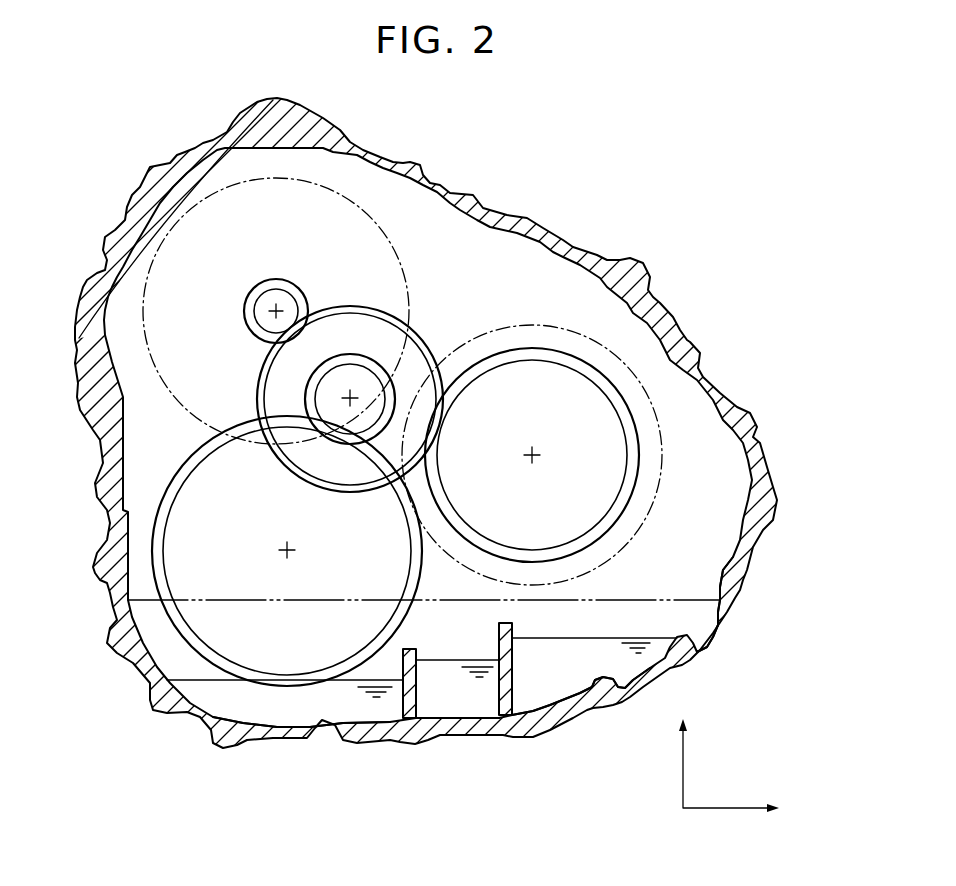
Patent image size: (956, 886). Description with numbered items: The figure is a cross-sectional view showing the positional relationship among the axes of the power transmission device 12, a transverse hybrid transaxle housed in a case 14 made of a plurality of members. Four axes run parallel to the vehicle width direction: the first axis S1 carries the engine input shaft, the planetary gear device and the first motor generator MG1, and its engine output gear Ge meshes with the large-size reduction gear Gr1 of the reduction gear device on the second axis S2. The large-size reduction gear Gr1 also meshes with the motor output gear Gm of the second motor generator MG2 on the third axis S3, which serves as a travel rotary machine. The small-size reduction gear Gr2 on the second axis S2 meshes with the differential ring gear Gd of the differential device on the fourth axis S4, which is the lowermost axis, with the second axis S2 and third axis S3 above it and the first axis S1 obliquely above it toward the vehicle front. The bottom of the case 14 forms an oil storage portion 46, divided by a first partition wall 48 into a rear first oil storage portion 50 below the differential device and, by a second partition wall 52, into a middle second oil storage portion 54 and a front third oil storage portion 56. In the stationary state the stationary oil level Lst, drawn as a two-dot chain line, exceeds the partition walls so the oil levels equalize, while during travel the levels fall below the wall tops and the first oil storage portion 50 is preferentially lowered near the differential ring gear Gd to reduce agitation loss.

The power transmission device 12 is at (608, 132).
The case 14 is at (680, 352).
The oil storage portion 46 is at (692, 592).
The first partition wall 48 is at (383, 720).
The first oil storage portion 50 is at (283, 713).
The second partition wall 52 is at (515, 690).
The second oil storage portion 54 is at (455, 703).
The third oil storage portion 56 is at (592, 667).
The first axis S1 is at (544, 445).
The second axis S2 is at (350, 399).
The third axis S3 is at (276, 311).
The fourth axis S4 is at (278, 538).
The first motor generator MG1 is at (663, 457).
The second motor generator MG2 is at (187, 210).
The engine output gear Ge is at (588, 362).
The large-size reduction gear Gr1 is at (383, 382).
The small-size reduction gear Gr2 is at (306, 407).
The motor output gear Gm is at (243, 313).
The differential ring gear Gd is at (154, 528).
The stationary oil level Lst is at (424, 589).